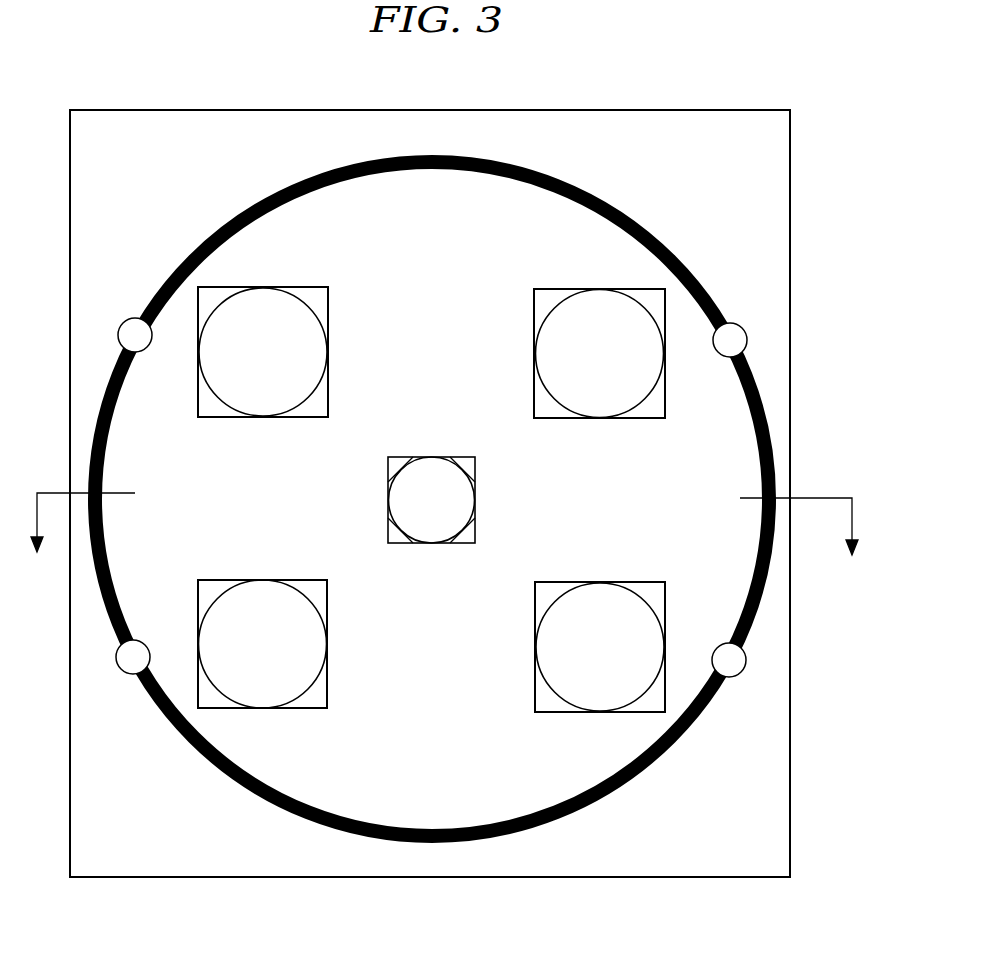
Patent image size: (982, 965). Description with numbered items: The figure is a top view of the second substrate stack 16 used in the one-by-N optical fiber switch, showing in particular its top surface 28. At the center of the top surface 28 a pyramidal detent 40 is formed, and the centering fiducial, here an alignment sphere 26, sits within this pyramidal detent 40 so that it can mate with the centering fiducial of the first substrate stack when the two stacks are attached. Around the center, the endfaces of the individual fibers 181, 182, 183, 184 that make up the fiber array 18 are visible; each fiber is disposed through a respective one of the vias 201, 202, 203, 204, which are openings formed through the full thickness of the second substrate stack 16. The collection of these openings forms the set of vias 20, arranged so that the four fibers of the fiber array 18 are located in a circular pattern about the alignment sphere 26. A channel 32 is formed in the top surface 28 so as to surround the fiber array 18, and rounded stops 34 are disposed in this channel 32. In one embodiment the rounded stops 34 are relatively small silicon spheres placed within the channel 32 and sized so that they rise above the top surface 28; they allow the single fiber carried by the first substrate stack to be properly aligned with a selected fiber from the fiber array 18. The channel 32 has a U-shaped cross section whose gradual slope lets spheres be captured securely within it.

The second substrate stack 16 is at (604, 56).
The fiber array 18 is at (432, 497).
The individual fiber 181 is at (282, 308).
The individual fiber 182 is at (597, 308).
The individual fiber 183 is at (595, 695).
The individual fiber 184 is at (275, 690).
The vias 20 is at (431, 499).
The via 201 is at (322, 305).
The via 202 is at (537, 308).
The via 203 is at (542, 695).
The via 204 is at (320, 695).
The alignment sphere 26 is at (556, 498).
The top surface 28 is at (770, 270).
The channel 32 is at (575, 183).
The rounded stops 34 is at (128, 318).
The pyramidal detent 40 is at (465, 457).